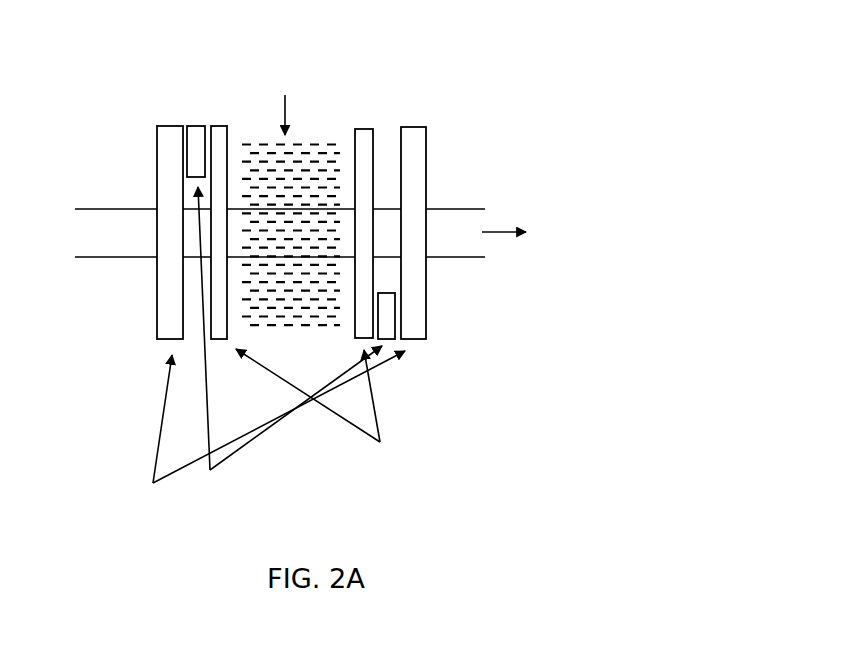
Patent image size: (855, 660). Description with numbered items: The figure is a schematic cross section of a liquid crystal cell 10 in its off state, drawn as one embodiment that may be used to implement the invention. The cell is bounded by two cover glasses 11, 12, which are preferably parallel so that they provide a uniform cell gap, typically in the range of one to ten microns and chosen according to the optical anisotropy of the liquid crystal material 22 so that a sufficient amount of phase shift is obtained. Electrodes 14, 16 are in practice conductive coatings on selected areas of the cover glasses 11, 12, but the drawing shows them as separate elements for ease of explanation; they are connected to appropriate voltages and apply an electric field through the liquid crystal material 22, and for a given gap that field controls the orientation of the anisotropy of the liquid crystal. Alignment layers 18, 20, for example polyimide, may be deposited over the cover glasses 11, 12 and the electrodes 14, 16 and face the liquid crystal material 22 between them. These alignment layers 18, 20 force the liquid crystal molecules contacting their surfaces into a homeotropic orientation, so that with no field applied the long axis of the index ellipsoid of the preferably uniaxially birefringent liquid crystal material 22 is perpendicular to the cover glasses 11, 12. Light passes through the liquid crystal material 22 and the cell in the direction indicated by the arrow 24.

The liquid crystal cell 10 is at (513, 86).
The cover glass 11 is at (157, 325).
The cover glass 12 is at (426, 300).
The electrode 14 is at (192, 126).
The electrode 16 is at (388, 346).
The alignment layer 18 is at (215, 126).
The alignment layer 20 is at (368, 128).
The liquid crystal material 22 is at (320, 140).
The arrow 24 is at (494, 232).